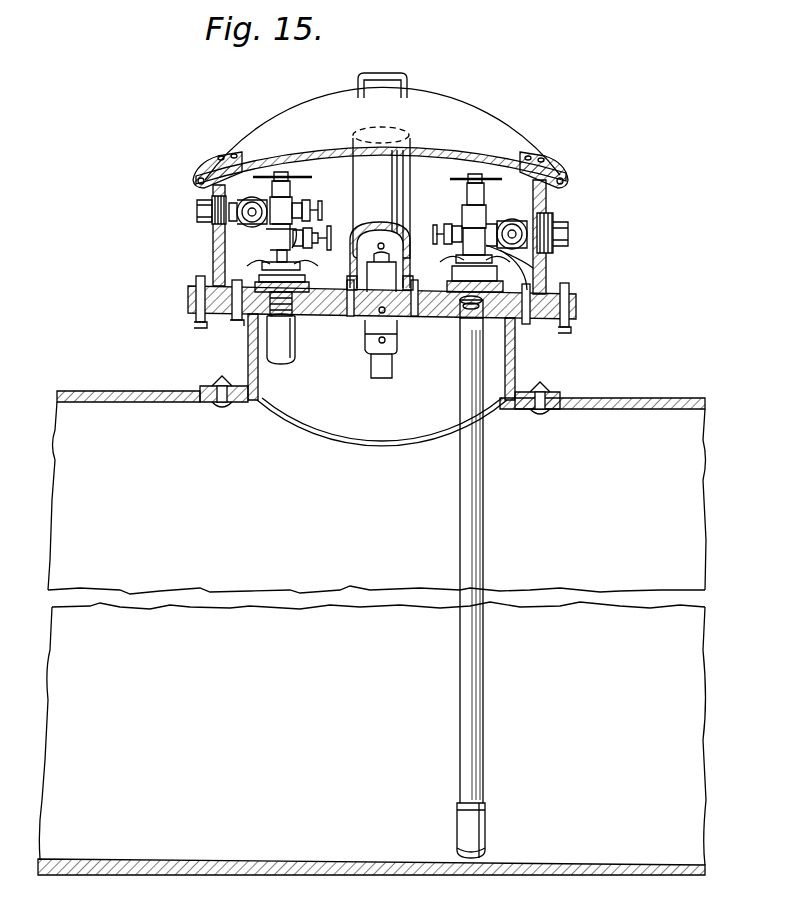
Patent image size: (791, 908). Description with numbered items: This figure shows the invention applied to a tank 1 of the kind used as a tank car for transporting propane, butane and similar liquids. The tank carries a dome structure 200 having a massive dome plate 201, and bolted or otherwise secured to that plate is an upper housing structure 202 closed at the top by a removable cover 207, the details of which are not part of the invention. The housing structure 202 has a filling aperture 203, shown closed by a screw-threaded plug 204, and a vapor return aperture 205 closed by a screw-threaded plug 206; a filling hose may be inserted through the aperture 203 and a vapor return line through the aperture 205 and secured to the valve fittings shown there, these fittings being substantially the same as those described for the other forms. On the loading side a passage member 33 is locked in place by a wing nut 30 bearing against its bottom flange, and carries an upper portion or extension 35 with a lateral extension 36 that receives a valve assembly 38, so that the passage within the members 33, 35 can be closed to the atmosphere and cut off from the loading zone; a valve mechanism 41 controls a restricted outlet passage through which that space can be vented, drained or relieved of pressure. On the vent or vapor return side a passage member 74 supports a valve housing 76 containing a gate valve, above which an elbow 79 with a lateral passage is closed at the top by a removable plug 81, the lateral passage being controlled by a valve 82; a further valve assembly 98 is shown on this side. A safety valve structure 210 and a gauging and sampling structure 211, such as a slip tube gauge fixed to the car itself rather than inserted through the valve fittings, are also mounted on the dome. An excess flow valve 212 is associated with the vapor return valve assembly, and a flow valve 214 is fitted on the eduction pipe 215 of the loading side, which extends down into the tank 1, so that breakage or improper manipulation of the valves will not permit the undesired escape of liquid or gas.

The tank 1 is at (633, 400).
The wing nut 30 is at (488, 272).
The passage member 33 is at (545, 266).
The upper portion or extension 35 is at (462, 232).
The side passage or lateral extension 36 is at (466, 232).
The valve assembly 38 is at (509, 220).
The valve mechanism 41 is at (460, 250).
The passage member 74 is at (272, 247).
The valve housing 76 is at (274, 238).
The passage member or elbow 79 is at (306, 208).
The removable top closure or plug 81 is at (290, 190).
The valve 82 is at (240, 186).
The valve 98 is at (268, 176).
The dome structure 200 is at (250, 345).
The dome plate 201 is at (188, 302).
The upper housing structure 202 is at (213, 250).
The filling aperture 203 is at (548, 204).
The screw-threaded plug 204 is at (568, 231).
The vapor return aperture 205 is at (213, 233).
The screw-threaded plug 206 is at (200, 205).
The removable cover 207 is at (422, 102).
The safety valve structure 210 is at (397, 330).
The gauging and sampling structure 211 is at (357, 178).
The excess flow valve 212 is at (278, 343).
The flow valve 214 is at (487, 822).
The eduction pipe 215 is at (484, 521).